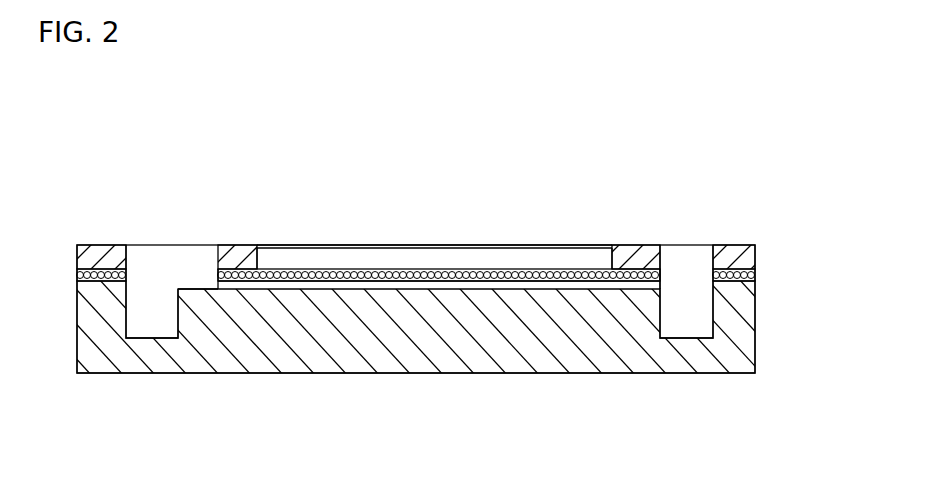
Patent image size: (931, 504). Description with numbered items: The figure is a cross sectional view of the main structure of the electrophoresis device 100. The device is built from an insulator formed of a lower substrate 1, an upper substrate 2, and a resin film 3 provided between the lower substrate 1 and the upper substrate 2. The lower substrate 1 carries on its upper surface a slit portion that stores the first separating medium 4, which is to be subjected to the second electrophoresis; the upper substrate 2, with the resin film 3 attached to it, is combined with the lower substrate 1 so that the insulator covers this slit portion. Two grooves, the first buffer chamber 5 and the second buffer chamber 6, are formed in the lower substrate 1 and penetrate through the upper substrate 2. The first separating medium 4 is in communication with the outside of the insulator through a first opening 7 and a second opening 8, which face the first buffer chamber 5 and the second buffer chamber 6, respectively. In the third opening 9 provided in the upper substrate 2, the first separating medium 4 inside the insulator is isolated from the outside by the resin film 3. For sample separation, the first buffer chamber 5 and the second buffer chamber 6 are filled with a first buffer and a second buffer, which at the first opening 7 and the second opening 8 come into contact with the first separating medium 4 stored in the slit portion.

The electrophoresis device 100 is at (592, 165).
The lower substrate 1 is at (756, 326).
The upper substrate 2 is at (756, 247).
The resin film 3 is at (756, 274).
The first separating medium 4 is at (433, 282).
The first buffer chamber 5 is at (145, 305).
The second buffer chamber 6 is at (690, 305).
The first opening 7 is at (216, 280).
The second opening 8 is at (664, 280).
The third opening 9 is at (311, 257).